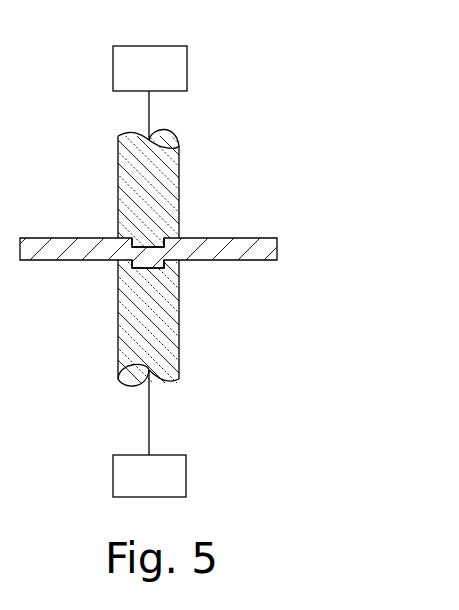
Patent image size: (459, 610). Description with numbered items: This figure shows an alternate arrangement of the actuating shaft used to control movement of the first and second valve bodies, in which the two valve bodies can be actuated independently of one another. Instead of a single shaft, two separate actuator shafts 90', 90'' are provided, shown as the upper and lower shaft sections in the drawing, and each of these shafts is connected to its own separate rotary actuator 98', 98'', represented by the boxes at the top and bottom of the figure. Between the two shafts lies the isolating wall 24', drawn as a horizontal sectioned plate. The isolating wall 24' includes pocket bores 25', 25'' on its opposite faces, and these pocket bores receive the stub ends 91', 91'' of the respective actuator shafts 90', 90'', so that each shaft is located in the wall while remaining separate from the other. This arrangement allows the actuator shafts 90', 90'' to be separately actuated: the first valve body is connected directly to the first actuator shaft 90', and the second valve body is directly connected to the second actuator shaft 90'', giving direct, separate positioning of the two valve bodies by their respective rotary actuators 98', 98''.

The first actuator shaft 90' is at (180, 208).
The second actuator shaft 90'' is at (180, 332).
The stub end of first actuator shaft 91' is at (118, 209).
The stub end of second actuator shaft 91'' is at (118, 293).
The isolating wall 24' is at (169, 221).
The first pocket bore 25' is at (208, 223).
The second pocket bore 25'' is at (210, 280).
The first rotary actuator 98' is at (149, 433).
The second rotary actuator 98'' is at (150, 93).